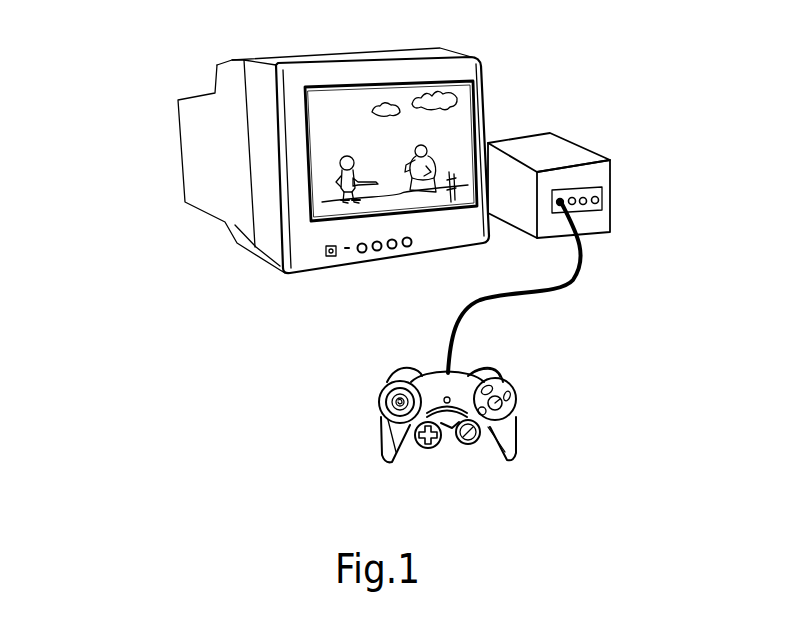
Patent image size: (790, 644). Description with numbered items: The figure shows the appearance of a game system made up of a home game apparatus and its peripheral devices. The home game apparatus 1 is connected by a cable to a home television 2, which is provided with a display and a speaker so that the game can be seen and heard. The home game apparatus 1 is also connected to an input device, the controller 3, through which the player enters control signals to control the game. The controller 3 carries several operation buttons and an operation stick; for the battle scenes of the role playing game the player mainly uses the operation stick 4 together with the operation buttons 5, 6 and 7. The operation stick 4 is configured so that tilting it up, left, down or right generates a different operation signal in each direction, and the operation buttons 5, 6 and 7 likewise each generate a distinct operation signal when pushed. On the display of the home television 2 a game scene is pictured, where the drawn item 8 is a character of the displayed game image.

The home game apparatus 1 is at (603, 152).
The home television 2 is at (217, 97).
The controller 3 is at (520, 448).
The operation stick 4 is at (462, 447).
The operation button 5 is at (518, 397).
The operation button 6 is at (395, 373).
The operation button 7 is at (497, 373).
The game image / player character 8 is at (347, 155).